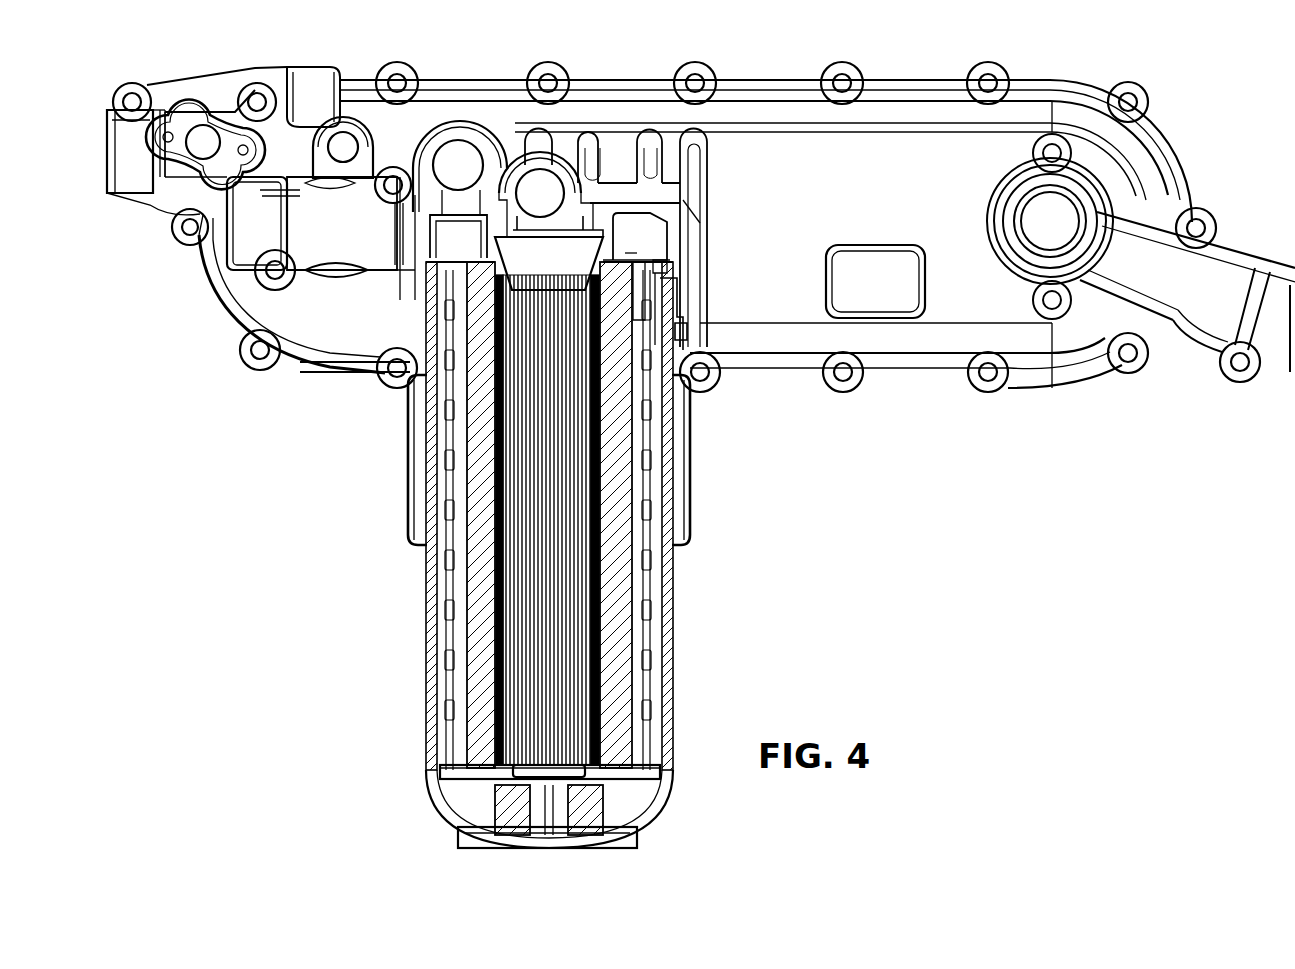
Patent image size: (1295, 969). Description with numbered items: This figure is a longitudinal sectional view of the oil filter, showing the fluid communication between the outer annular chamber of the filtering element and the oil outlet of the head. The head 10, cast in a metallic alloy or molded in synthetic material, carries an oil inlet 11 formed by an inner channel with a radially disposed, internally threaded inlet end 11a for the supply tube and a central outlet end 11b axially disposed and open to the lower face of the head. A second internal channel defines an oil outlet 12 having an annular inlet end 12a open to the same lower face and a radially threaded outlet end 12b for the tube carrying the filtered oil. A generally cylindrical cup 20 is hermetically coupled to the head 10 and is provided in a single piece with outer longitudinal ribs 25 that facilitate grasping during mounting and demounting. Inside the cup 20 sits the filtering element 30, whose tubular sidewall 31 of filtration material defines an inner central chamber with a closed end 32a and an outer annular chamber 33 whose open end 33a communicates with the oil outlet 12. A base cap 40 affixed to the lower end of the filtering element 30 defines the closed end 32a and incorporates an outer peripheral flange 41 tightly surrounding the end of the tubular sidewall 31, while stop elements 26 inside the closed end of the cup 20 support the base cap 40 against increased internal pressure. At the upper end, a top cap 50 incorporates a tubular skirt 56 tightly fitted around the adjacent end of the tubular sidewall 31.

The head 10 is at (808, 380).
The oil inlet 11 is at (362, 228).
The inlet end 11a is at (258, 240).
The central outlet end 11b is at (545, 242).
The oil outlet 12 is at (290, 143).
The annular inlet end 12a is at (447, 158).
The outlet end 12b is at (136, 172).
The cup 20 is at (425, 588).
The outer longitudinal ribs 25 is at (410, 472).
The stop elements 26 is at (497, 805).
The filtering element 30 is at (630, 597).
The tubular sidewall 31 is at (490, 553).
The closed end 32a is at (615, 765).
The outer annular chamber 33 is at (655, 552).
The open end 33a is at (658, 287).
The base cap 40 is at (483, 760).
The outer peripheral flange 41 is at (440, 766).
The top cap 50 is at (637, 253).
The tubular skirt 56 is at (665, 275).